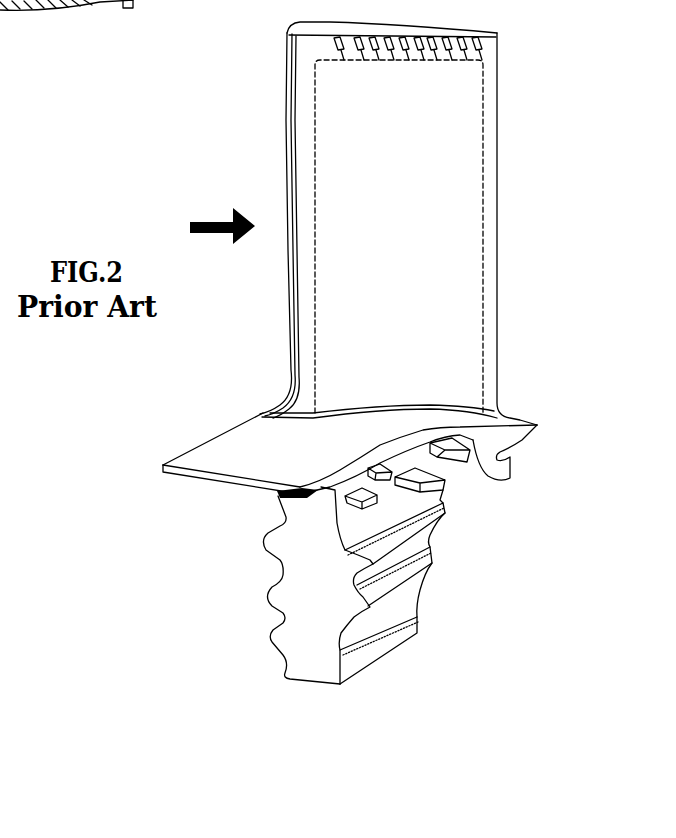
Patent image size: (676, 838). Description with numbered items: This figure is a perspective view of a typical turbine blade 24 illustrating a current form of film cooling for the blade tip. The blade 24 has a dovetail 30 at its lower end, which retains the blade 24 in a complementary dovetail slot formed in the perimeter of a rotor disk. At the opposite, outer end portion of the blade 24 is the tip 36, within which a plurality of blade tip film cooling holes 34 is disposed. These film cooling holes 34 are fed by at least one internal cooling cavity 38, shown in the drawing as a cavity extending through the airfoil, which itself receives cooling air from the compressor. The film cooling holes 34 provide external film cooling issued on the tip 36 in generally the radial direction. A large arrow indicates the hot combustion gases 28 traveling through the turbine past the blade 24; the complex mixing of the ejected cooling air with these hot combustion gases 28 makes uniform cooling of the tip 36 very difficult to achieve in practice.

The blade 24 is at (256, 67).
The hot combustion gases 28 is at (222, 218).
The dovetail 30 is at (387, 642).
The blade tip film cooling holes 34 is at (351, 50).
The tip 36 is at (498, 57).
The internal cooling cavity 38 is at (483, 239).